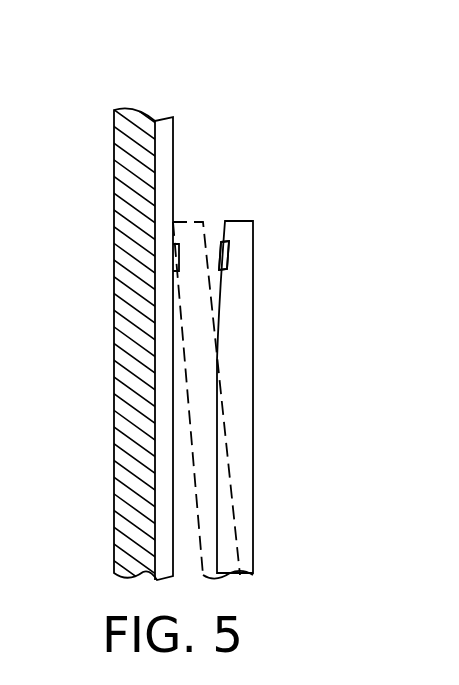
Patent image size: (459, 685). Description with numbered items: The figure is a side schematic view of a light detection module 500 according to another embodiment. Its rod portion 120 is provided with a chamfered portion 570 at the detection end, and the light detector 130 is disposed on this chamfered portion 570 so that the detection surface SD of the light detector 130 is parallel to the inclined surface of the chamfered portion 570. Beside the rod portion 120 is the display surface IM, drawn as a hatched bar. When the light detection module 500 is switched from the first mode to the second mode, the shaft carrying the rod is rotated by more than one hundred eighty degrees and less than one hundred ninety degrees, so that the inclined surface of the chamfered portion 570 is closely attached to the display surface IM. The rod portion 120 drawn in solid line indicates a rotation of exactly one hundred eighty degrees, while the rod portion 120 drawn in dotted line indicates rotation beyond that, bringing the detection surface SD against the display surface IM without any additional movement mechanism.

The display surface IM is at (176, 143).
The rod portion 120 is at (248, 471).
The light detector 130 is at (222, 257).
The chamfered portion 570 is at (212, 223).
The detection surface SD is at (217, 256).
The light detection module 500 is at (340, 580).